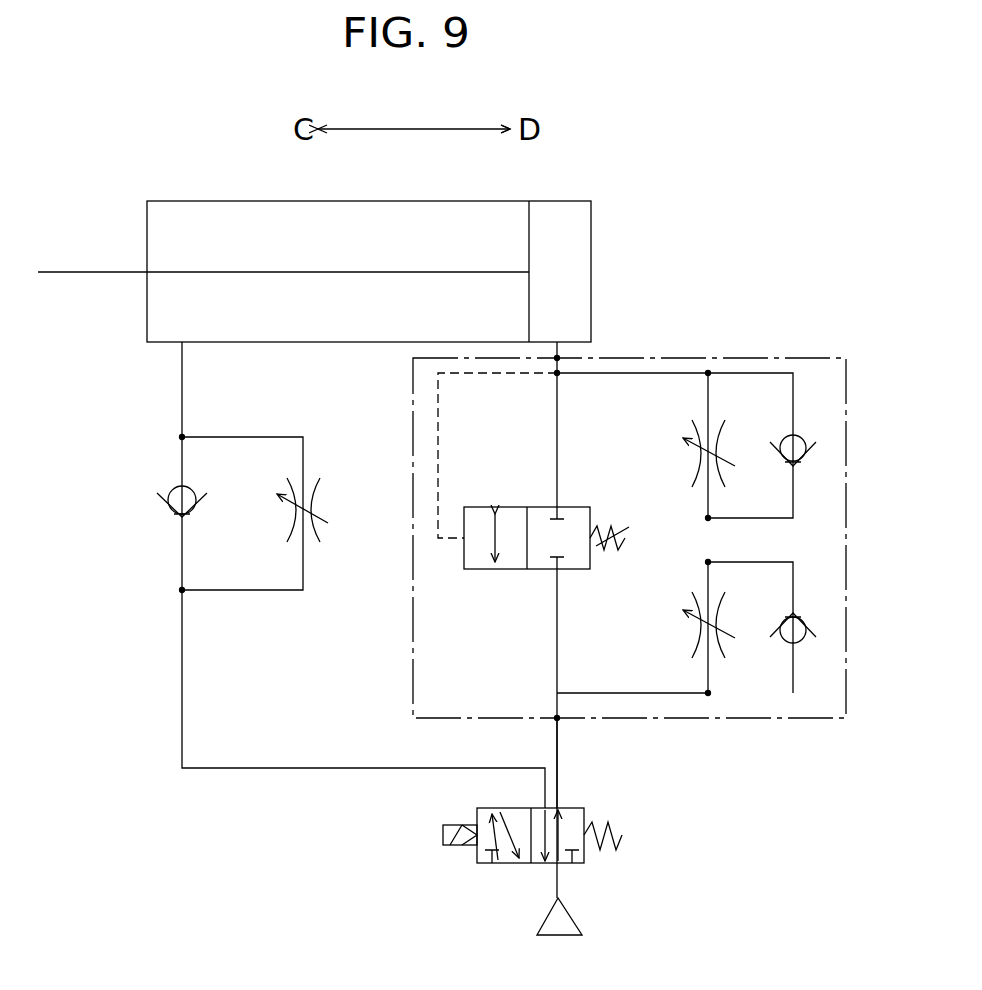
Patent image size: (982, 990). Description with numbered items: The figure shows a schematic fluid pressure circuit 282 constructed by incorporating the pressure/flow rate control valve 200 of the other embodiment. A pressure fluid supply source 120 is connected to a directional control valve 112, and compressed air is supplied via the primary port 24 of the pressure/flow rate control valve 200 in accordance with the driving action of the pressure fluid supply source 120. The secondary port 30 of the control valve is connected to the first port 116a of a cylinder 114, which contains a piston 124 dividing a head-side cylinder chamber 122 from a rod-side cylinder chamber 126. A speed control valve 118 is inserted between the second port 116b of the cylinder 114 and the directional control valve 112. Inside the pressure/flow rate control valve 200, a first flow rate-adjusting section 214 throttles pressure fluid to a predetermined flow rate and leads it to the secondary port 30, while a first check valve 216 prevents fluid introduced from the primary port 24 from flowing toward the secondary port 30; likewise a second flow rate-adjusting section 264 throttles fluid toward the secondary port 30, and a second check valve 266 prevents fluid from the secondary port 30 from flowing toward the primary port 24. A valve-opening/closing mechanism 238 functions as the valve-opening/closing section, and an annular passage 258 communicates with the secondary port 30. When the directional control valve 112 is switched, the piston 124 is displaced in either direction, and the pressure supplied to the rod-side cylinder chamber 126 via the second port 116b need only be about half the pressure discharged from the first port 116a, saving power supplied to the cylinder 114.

The fluid pressure circuit 282 is at (697, 121).
The cylinder 114 is at (358, 201).
The piston 124 is at (530, 236).
The rod-side cylinder chamber 126 is at (326, 258).
The head-side cylinder chamber 122 is at (579, 281).
The first port 116a is at (560, 352).
The second port 116b is at (180, 345).
The speed control valve 118 is at (150, 557).
The pressure/flow rate control valve 200 is at (752, 358).
The secondary port 30 is at (560, 366).
The annular passage 258 is at (468, 432).
The valve-opening/closing mechanism 238 is at (563, 508).
The second flow rate-adjusting section 264 is at (683, 455).
The second check valve 266 is at (780, 440).
The first flow rate-adjusting section 214 is at (690, 630).
The first check valve 216 is at (788, 645).
The primary port 24 is at (560, 720).
The directional control valve 112 is at (577, 806).
The pressure fluid supply source 120 is at (578, 917).